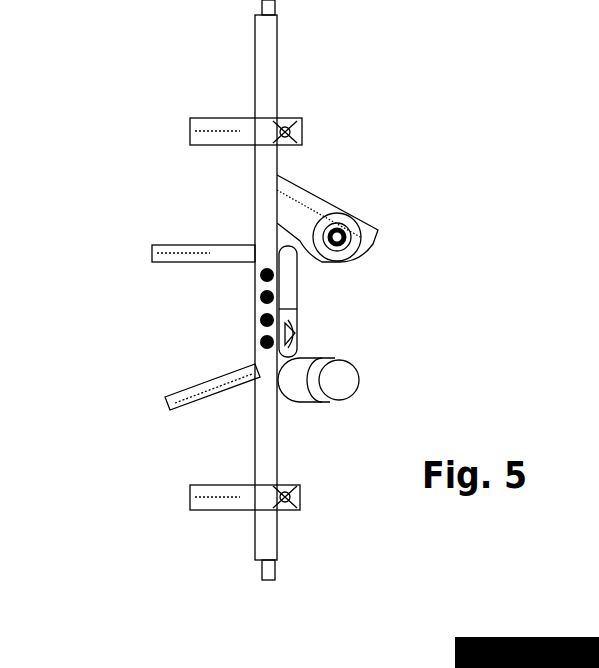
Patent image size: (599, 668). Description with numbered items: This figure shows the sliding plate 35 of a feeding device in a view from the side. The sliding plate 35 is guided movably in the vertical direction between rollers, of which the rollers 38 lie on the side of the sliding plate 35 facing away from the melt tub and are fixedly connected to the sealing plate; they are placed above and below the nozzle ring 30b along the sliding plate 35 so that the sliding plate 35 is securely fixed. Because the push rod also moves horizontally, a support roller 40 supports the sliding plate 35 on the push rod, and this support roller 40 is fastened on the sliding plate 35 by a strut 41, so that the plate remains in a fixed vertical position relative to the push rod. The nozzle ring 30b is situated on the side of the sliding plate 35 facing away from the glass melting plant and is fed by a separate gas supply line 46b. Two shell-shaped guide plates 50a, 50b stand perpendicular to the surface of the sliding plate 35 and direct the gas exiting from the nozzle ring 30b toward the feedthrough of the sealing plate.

The sliding plate 35 is at (266, 32).
The rollers 38 is at (288, 125).
The strut 41 is at (312, 203).
The support roller 40 is at (340, 262).
The nozzle ring 30b is at (283, 300).
The gas supply line 46b is at (342, 372).
The guide plate 50a is at (172, 252).
The guide plate 50b is at (178, 400).